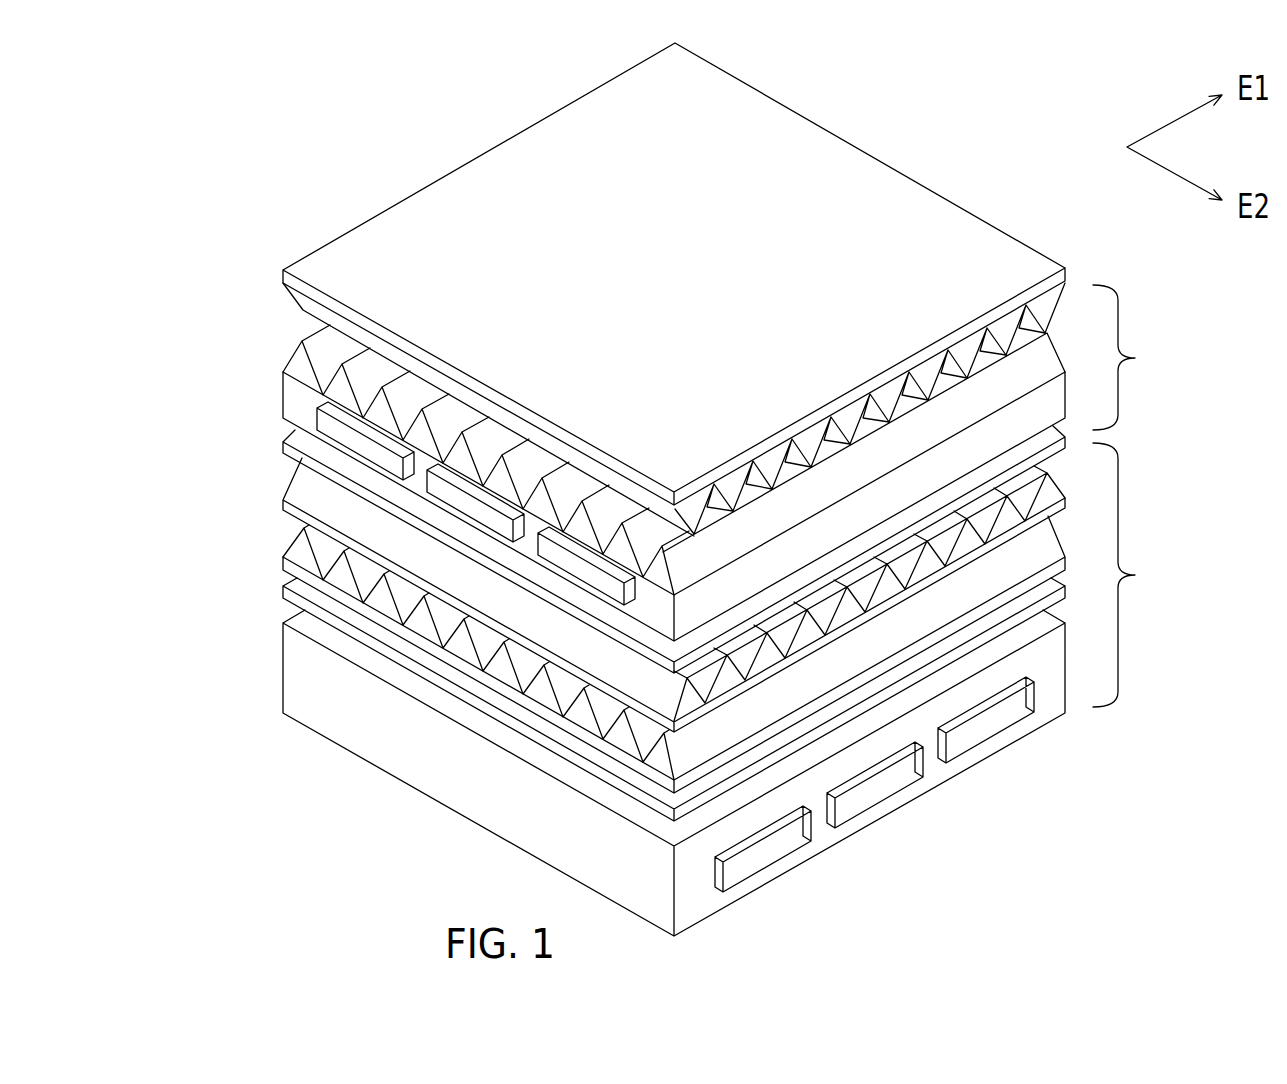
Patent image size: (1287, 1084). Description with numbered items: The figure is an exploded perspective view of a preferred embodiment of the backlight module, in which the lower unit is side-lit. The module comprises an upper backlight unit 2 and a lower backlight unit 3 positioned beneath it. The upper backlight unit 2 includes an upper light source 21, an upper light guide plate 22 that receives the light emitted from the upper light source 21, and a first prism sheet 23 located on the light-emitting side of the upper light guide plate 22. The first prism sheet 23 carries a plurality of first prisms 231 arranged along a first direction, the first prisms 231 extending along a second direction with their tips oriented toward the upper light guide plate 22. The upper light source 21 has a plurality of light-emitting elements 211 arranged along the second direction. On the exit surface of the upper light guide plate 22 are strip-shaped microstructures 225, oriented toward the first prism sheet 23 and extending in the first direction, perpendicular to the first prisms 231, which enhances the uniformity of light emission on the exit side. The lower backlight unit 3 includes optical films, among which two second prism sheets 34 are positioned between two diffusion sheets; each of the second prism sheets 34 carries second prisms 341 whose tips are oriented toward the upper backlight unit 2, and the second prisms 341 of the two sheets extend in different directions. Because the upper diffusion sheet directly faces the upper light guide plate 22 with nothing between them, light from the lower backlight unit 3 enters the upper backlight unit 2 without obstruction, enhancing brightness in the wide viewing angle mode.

The upper backlight unit 2 is at (1127, 357).
The upper light source 21 is at (305, 414).
The light-emitting elements 211 is at (443, 498).
The upper light guide plate 22 is at (268, 370).
The strip-shaped microstructures 225 is at (297, 362).
The first prism sheet 23 is at (340, 224).
The first prisms 231 is at (302, 303).
The lower backlight unit 3 is at (721, 689).
The second prism sheets 34 is at (274, 562).
The second prisms 341 is at (337, 577).